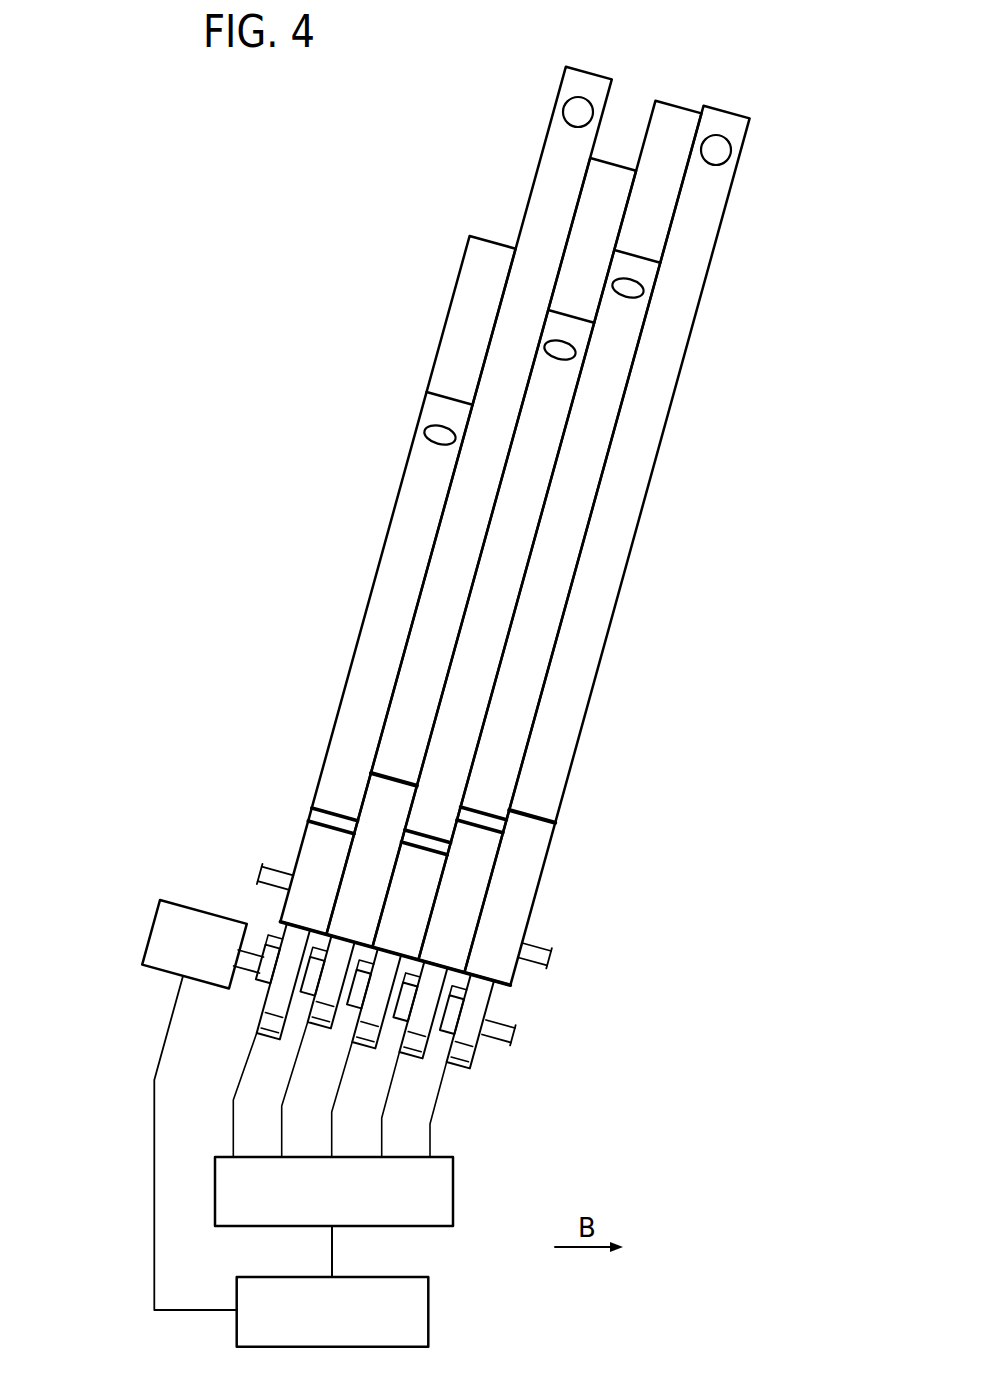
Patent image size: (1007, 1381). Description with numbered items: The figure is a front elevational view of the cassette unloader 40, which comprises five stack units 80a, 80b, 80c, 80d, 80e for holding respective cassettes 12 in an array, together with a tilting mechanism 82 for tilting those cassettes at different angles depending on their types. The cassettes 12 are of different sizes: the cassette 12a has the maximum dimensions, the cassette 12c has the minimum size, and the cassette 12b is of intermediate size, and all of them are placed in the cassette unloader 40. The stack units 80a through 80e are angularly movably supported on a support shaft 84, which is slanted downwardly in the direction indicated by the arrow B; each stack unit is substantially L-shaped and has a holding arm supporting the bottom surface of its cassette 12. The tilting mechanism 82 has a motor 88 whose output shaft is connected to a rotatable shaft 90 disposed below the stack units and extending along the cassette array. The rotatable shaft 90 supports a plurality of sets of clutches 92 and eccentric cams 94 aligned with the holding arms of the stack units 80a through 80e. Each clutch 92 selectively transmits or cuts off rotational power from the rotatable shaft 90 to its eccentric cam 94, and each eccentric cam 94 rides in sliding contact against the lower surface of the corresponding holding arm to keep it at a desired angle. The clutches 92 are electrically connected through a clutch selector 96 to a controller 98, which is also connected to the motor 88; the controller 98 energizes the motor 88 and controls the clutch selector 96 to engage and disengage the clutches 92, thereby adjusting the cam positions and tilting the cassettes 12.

The cassette unloader 40 is at (280, 144).
The cassette 12 is at (582, 526).
The cassette of maximum dimensions 12a is at (528, 207).
The cassette of intermediate size 12b is at (656, 240).
The cassette of minimum size 12c is at (465, 344).
The stack unit 80a is at (533, 844).
The stack unit 80b is at (470, 890).
The stack unit 80c is at (403, 906).
The stack unit 80d is at (373, 856).
The stack unit 80e is at (294, 950).
The tilting mechanism 82 is at (159, 1087).
The support shaft 84 is at (544, 963).
The motor 88 is at (193, 927).
The rotatable shaft 90 is at (252, 963).
The clutch 92 is at (276, 949).
The eccentric cam 94 is at (277, 1034).
The clutch selector 96 is at (454, 1192).
The controller 98 is at (430, 1310).